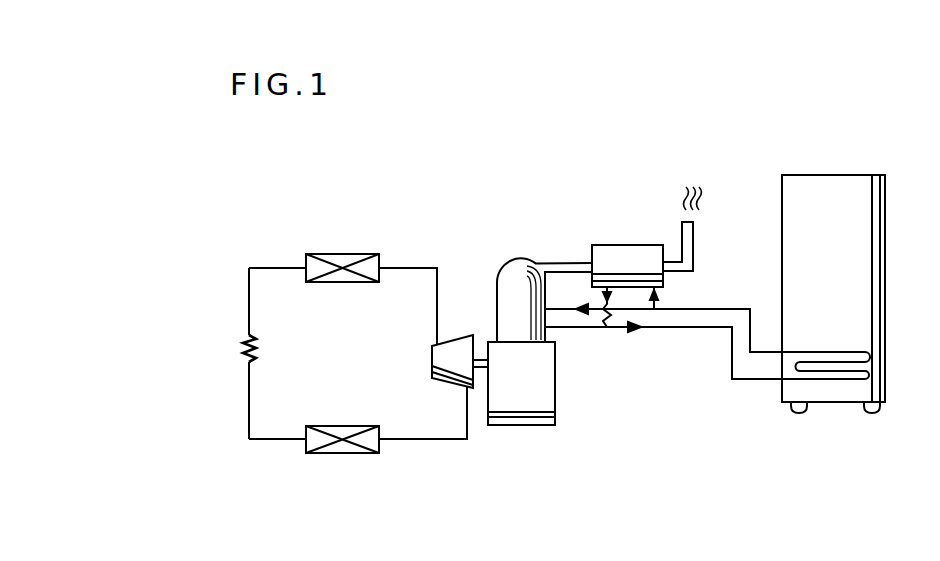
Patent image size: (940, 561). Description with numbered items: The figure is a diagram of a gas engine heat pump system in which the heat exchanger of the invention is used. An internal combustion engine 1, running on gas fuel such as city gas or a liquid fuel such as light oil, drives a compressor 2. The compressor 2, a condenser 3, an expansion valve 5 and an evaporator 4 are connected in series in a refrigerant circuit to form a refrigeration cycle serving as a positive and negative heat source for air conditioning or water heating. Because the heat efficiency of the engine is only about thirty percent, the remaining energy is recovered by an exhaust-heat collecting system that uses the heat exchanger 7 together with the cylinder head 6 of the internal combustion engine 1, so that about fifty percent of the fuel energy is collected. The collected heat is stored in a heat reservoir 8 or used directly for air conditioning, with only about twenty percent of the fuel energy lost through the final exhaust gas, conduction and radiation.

The internal combustion engine 1 is at (536, 416).
The compressor 2 is at (452, 377).
The condenser 3 is at (349, 260).
The evaporator 4 is at (337, 453).
The expansion valve 5 is at (245, 351).
The cylinder head 6 is at (518, 267).
The heat exchanger 7 is at (614, 252).
The heat reservoir 8 is at (877, 277).